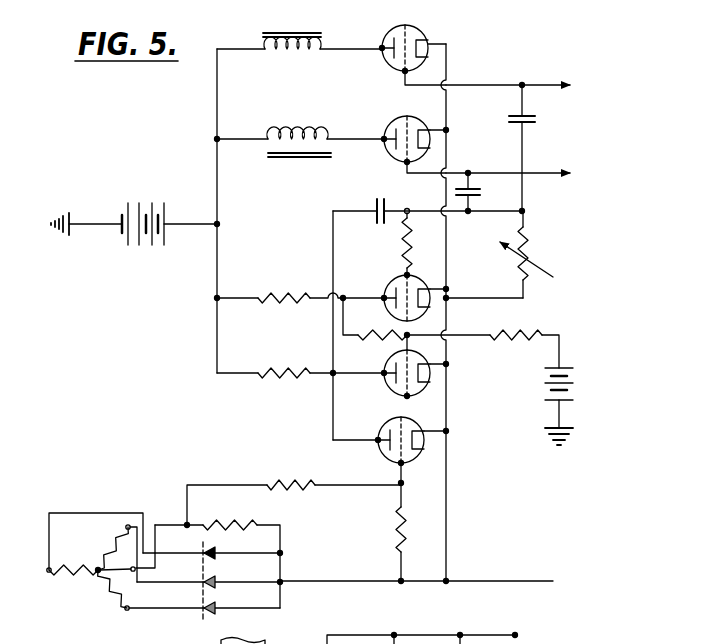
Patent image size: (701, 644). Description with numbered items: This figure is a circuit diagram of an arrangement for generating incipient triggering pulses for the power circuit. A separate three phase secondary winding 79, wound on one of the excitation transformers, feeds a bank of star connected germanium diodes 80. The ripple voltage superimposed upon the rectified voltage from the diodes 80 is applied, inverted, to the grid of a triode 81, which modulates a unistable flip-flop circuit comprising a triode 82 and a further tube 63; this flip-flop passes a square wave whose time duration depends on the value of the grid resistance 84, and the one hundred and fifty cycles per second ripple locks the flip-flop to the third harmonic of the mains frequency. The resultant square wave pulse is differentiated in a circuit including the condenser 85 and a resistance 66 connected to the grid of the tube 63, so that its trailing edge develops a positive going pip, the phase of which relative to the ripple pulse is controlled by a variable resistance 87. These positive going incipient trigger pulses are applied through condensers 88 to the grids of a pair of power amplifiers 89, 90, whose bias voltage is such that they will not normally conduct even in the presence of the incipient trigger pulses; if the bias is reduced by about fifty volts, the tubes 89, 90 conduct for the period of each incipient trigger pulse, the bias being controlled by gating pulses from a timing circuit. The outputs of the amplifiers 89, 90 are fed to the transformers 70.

The transformers 70 is at (292, 57).
The power amplifier 89 is at (392, 122).
The power amplifier 90 is at (430, 41).
The condensers 88 is at (514, 120).
The condenser 85 is at (378, 202).
The grid resistor 66 is at (400, 230).
The electron discharge tube 63 is at (391, 284).
The variable resistance 87 is at (521, 263).
The grid resistance 84 is at (367, 342).
The triode 82 is at (401, 395).
The triode 81 is at (396, 456).
The three phase secondary winding 79 is at (112, 542).
The star connected germanium diodes 80 is at (216, 603).